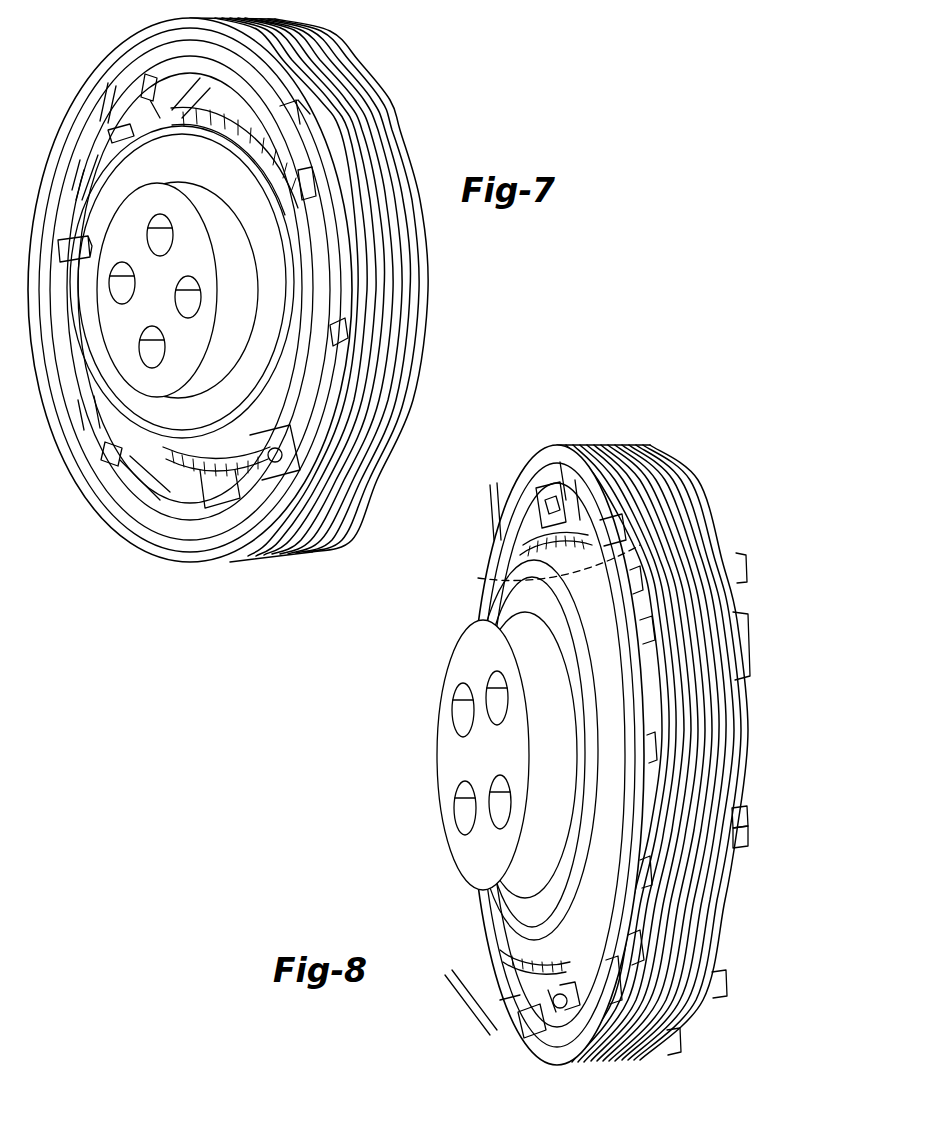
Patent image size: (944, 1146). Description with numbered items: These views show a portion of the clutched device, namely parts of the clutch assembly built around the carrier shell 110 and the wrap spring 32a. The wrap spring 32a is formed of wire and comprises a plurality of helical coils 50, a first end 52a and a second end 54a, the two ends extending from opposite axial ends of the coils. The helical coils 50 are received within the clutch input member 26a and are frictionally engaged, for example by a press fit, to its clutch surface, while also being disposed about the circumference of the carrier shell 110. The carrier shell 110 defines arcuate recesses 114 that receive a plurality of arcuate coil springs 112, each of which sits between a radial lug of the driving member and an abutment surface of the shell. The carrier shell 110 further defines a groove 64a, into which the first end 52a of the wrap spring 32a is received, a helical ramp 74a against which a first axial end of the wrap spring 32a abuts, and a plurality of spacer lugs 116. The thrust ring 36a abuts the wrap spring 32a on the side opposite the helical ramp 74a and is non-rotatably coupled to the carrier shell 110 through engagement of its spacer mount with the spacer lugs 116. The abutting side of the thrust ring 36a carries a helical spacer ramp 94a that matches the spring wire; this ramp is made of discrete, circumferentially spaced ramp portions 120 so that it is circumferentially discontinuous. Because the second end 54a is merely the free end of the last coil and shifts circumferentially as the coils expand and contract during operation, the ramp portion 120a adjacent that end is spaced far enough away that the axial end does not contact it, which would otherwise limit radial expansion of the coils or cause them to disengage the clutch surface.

In FIG. 7, the clutch input member 26a is at (314, 338).
In FIG. 8, the clutch input member 26a is at (478, 578).
In FIG. 8, the wrap spring 32a is at (580, 436).
In FIG. 8, the thrust ring 36a is at (456, 922).
In FIG. 8, the helical coils 50 is at (631, 445).
In FIG. 8, the first end 52a is at (746, 820).
In FIG. 8, the second end 54a is at (622, 1062).
In FIG. 8, the groove 64a is at (740, 840).
In FIG. 8, the helical ramp 74a is at (731, 642).
In FIG. 8, the helical spacer ramp 94a is at (660, 705).
In FIG. 7, the carrier shell 110 is at (218, 492).
In FIG. 8, the carrier shell 110 is at (712, 974).
In FIG. 8, the arcuate coil springs 112 is at (522, 480).
In FIG. 8, the arcuate recesses 114 is at (581, 1066).
In FIG. 7, the spacer lugs 116 is at (124, 440).
In FIG. 8, the spacer lugs 116 is at (528, 1005).
In FIG. 8, the ramp portions 120 is at (630, 626).
In FIG. 8, the ramp portion 120a is at (652, 826).